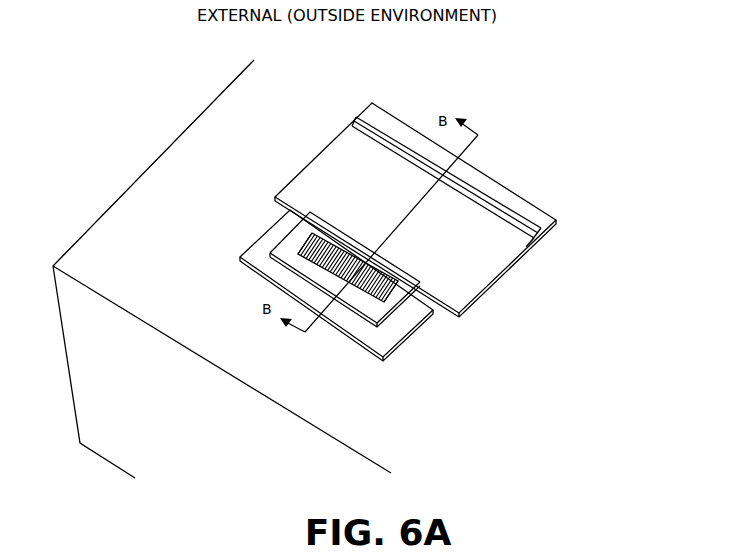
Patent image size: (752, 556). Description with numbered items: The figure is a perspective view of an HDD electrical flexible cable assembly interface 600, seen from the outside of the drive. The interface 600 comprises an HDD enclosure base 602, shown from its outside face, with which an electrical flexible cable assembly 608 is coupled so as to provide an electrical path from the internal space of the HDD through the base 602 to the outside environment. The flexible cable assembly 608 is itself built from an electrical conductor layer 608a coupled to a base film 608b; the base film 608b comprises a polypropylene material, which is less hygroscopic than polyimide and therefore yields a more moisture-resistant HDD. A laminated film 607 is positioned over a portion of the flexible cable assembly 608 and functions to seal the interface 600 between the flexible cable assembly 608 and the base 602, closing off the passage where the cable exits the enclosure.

The interface 600 is at (229, 68).
The HDD enclosure base 602 is at (130, 268).
The laminated film 607 is at (489, 258).
The electrical flexible cable assembly 608 is at (397, 313).
The electrical conductor layer 608a is at (285, 232).
The base film 608b is at (268, 258).